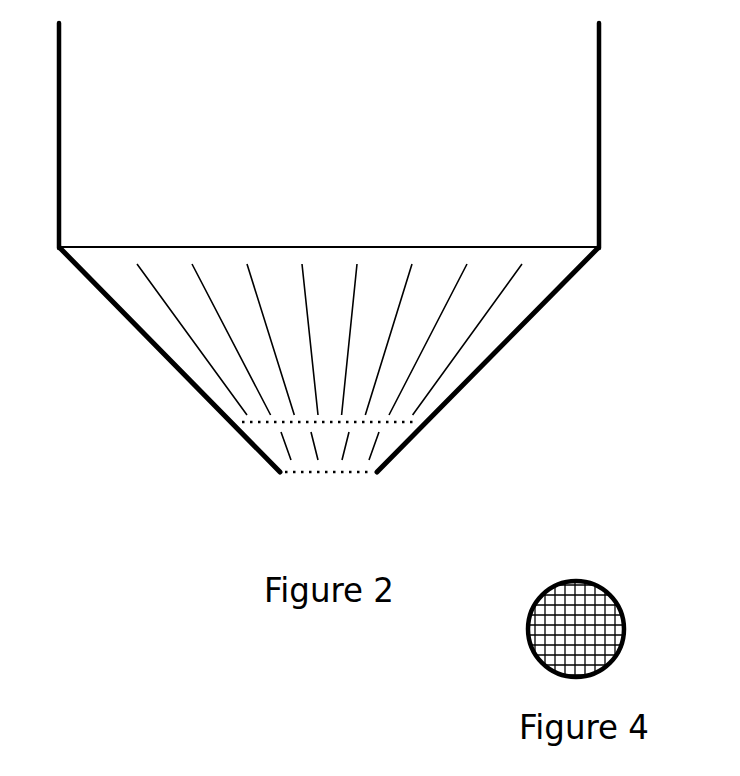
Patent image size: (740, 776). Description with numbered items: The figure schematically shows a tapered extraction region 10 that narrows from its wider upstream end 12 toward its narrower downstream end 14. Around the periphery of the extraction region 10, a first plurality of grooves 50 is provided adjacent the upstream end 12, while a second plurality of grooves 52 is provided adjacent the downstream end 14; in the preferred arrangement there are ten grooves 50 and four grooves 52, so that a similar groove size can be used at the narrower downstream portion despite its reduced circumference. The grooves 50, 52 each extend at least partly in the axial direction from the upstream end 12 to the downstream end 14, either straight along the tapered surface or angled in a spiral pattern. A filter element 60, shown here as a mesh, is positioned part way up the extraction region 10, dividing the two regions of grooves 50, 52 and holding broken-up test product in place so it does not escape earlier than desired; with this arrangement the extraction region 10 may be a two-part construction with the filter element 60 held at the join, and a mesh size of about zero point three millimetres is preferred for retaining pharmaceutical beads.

In FIG. 2, the extraction region 10 is at (505, 348).
In FIG. 2, the upstream end 12 is at (596, 257).
In FIG. 2, the downstream end 14 is at (315, 472).
In FIG. 2, the first plurality of grooves 50 is at (222, 363).
In FIG. 2, the second plurality of grooves 52 is at (273, 453).
In FIG. 2, the filter element 60 is at (363, 480).
In FIG. 4, the filter element 60 is at (600, 645).